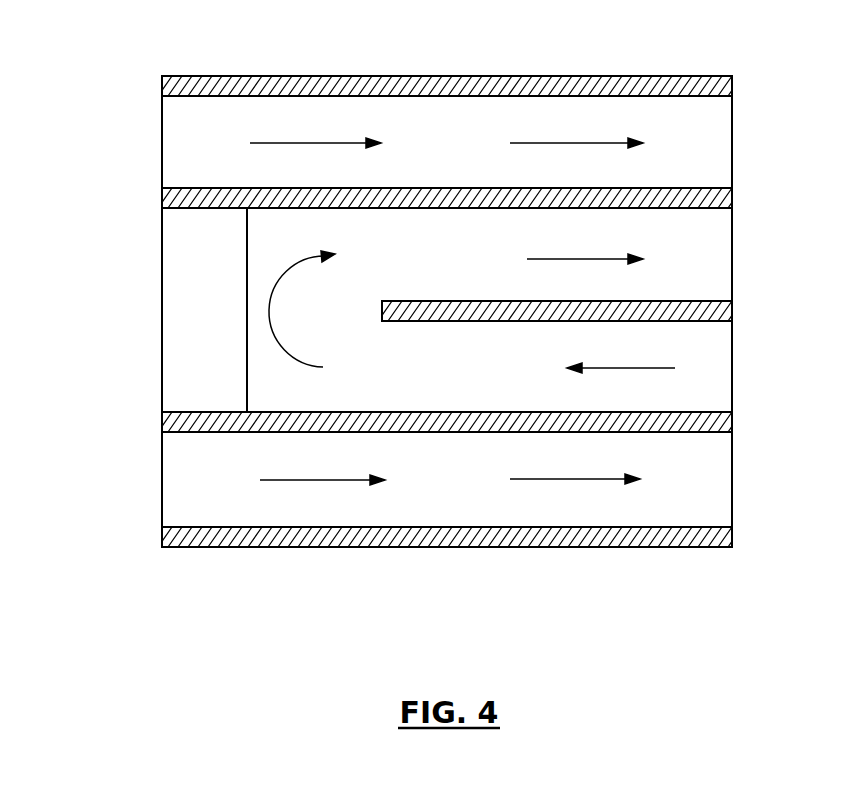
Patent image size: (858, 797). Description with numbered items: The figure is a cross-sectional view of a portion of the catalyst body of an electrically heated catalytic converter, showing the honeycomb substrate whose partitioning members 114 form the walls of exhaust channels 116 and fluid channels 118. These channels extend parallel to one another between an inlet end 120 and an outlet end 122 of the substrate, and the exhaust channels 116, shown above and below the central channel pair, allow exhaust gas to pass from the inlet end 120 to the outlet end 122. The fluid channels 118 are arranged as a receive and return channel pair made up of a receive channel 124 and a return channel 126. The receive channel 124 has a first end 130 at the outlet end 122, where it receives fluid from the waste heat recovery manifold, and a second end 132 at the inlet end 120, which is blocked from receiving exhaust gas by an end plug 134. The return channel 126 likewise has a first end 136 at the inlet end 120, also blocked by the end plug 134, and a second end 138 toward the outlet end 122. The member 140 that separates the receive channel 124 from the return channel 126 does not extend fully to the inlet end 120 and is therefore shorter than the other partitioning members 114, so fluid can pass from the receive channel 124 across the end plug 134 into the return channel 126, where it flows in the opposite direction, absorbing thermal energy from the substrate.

The partitioning member 114 is at (697, 187).
The exhaust channel 116 is at (600, 95).
The fluid channel 118 is at (717, 205).
The inlet end 120 is at (162, 477).
The outlet end 122 is at (733, 352).
The receive channel 124 is at (703, 360).
The return channel 126 is at (703, 246).
The first end of receive channel 130 is at (717, 385).
The second end of receive channel 132 is at (267, 395).
The end plug 134 is at (188, 386).
The first end of return channel 136 is at (267, 235).
The second end of return channel 138 is at (717, 253).
The member 140 is at (430, 300).